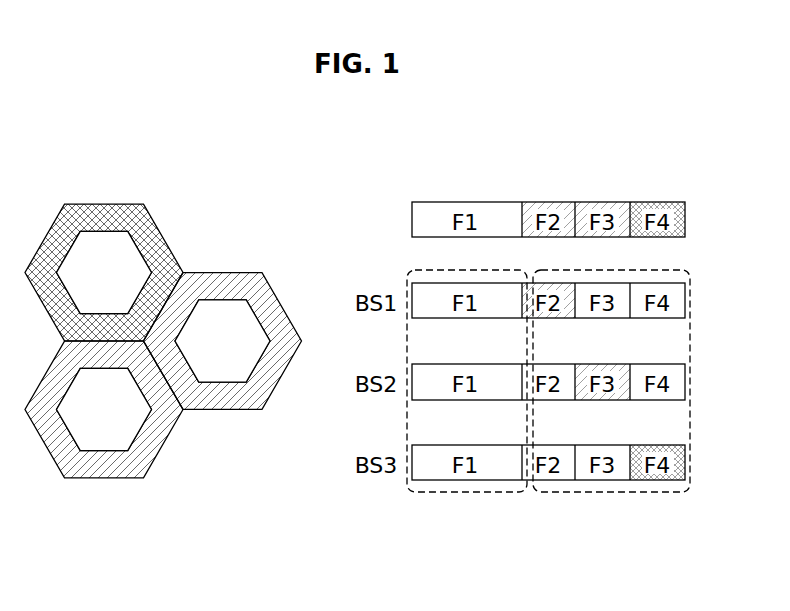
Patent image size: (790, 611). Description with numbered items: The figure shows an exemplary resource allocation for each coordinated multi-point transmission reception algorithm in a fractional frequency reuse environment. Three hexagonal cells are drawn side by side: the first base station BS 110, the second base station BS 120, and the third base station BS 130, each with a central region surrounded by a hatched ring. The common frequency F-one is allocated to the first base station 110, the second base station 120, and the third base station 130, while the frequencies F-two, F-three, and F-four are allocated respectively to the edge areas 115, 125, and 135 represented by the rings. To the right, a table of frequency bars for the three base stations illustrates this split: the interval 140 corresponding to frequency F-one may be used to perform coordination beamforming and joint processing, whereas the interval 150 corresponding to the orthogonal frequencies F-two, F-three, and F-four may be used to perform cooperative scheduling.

The base station 1 (BS1) 110 is at (223, 368).
The edge area 115 is at (273, 307).
The base station 2 (BS2) 120 is at (103, 432).
The edge area 125 is at (148, 435).
The base station 3 (BS3) 130 is at (124, 250).
The edge area 135 is at (105, 217).
The interval 140 is at (467, 495).
The interval 150 is at (610, 495).